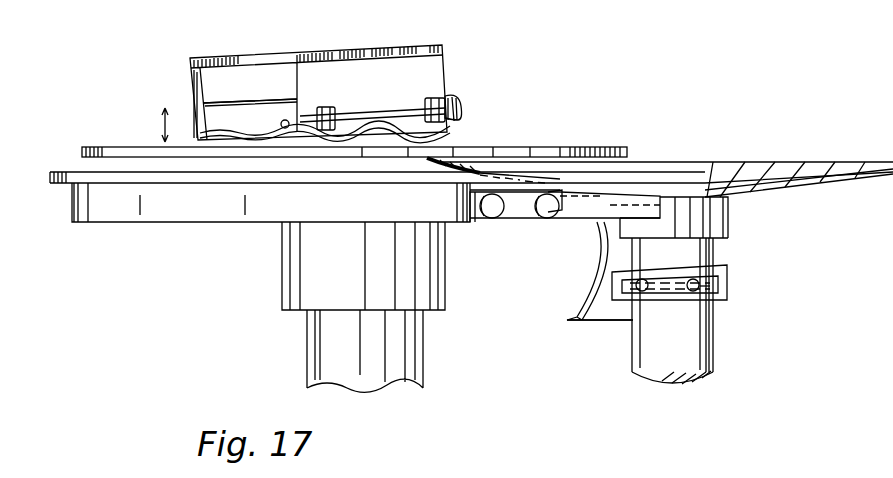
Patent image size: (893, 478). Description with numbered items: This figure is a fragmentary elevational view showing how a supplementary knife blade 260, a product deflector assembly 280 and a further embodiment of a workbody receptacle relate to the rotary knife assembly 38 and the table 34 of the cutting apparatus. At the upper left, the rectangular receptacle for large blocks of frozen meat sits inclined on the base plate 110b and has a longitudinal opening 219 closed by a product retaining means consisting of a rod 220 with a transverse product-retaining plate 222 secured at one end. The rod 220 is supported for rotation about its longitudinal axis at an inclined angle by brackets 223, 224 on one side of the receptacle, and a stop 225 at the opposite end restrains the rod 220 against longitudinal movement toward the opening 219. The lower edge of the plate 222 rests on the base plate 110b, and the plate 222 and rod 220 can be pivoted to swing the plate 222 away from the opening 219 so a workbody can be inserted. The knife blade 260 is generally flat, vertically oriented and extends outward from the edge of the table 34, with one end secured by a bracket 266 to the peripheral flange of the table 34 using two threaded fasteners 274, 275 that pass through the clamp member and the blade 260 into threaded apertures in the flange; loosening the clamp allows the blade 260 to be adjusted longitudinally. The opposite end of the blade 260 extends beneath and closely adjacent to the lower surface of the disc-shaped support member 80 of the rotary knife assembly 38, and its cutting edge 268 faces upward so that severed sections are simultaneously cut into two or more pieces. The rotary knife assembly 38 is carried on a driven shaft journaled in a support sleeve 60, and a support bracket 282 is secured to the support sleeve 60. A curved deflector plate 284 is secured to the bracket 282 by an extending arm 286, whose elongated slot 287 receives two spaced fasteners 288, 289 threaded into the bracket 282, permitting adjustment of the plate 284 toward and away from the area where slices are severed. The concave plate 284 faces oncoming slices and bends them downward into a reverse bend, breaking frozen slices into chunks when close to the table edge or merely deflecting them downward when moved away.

The base plate 110b is at (116, 146).
The longitudinal opening 219 is at (191, 100).
The rod 220 is at (363, 115).
The product-retaining plate 222 is at (233, 112).
The bracket 223 is at (330, 108).
The bracket 224 is at (443, 85).
The stop 225 is at (458, 108).
The table 34 is at (377, 197).
The threaded fastener 275 is at (552, 192).
The cutting edge 268 is at (627, 190).
The rotary knife assembly 38 is at (791, 155).
The disc-shaped support member 80 is at (793, 190).
The threaded fastener 274 is at (491, 222).
The bracket 266 is at (514, 233).
The knife blade 260 is at (573, 222).
The curved deflector plate 284 is at (570, 314).
The product deflector assembly 280 is at (606, 345).
The fastener 289 is at (698, 280).
The support bracket 282 is at (728, 269).
The arm 286 is at (722, 296).
The elongated slot 287 is at (672, 302).
The fastener 288 is at (638, 292).
The support sleeve 60 is at (710, 342).